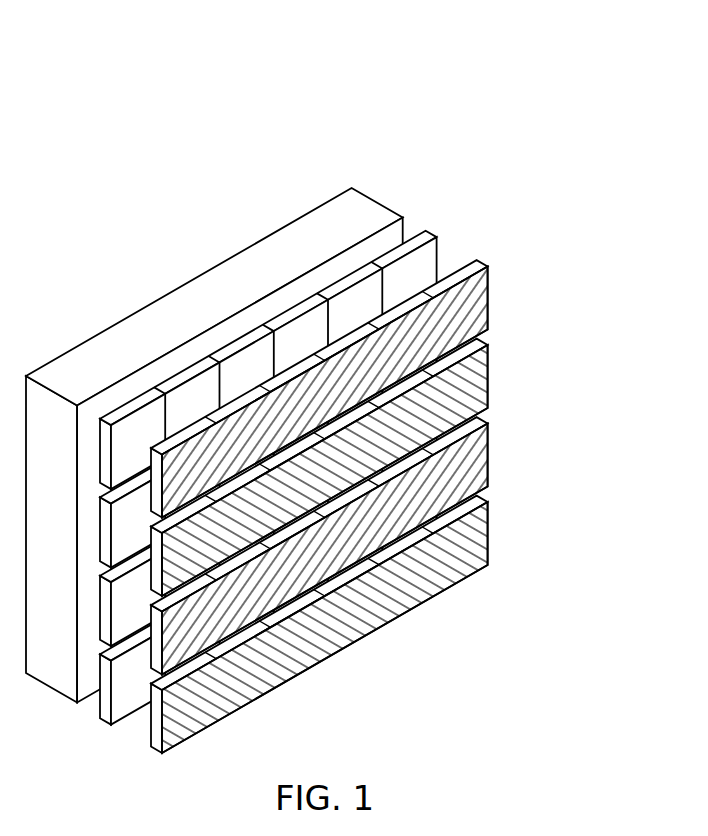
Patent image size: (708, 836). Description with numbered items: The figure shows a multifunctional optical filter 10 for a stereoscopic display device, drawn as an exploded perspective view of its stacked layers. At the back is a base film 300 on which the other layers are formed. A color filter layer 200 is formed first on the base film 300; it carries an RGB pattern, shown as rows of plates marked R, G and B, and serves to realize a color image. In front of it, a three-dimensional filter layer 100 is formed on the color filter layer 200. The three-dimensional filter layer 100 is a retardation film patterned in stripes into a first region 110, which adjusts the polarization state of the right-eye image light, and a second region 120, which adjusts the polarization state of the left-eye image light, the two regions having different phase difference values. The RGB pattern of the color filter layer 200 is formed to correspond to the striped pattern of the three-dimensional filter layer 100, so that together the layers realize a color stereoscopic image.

The optical filter 10 is at (495, 116).
The 3D filter layer 100 is at (400, 506).
The first region 110 is at (485, 296).
The second region 120 is at (363, 546).
The color filter layer 200 is at (434, 253).
The base film 300 is at (364, 205).